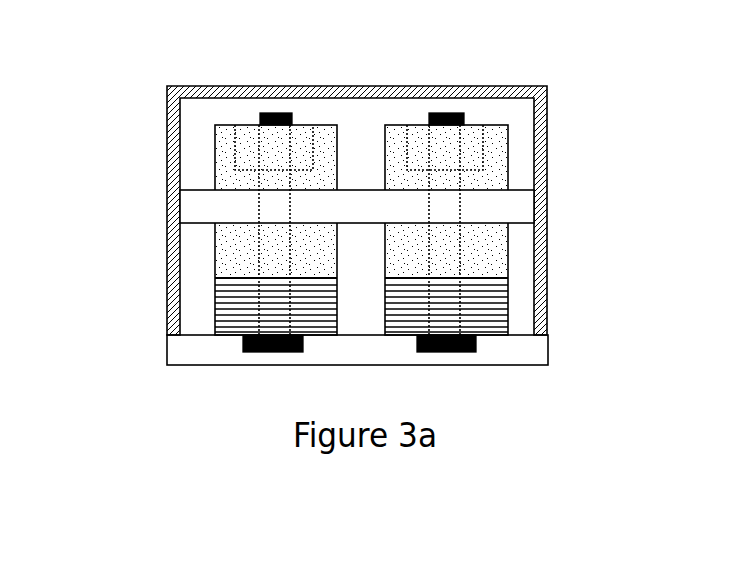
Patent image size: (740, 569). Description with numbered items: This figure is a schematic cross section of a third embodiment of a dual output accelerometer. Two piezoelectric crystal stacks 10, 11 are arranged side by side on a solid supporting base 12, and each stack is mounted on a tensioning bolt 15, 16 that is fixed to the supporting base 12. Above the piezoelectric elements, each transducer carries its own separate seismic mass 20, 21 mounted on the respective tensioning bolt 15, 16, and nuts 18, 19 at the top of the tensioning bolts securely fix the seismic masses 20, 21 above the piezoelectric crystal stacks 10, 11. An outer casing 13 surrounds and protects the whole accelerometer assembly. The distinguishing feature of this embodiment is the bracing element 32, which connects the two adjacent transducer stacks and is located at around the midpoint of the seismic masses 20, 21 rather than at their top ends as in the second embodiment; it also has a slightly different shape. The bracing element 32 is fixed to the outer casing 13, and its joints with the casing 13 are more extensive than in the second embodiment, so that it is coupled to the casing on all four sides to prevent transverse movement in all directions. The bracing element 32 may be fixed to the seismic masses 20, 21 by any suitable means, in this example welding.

The piezoelectric crystal stack 10 is at (230, 305).
The piezoelectric crystal stack 11 is at (497, 310).
The supporting base 12 is at (527, 354).
The outer casing 13 is at (549, 157).
The tensioning bolt 15 is at (278, 117).
The tensioning bolt 16 is at (456, 118).
The nut 18 is at (244, 148).
The nut 19 is at (417, 140).
The seismic mass 20 is at (220, 245).
The seismic mass 21 is at (497, 245).
The bracing element 32 is at (522, 207).